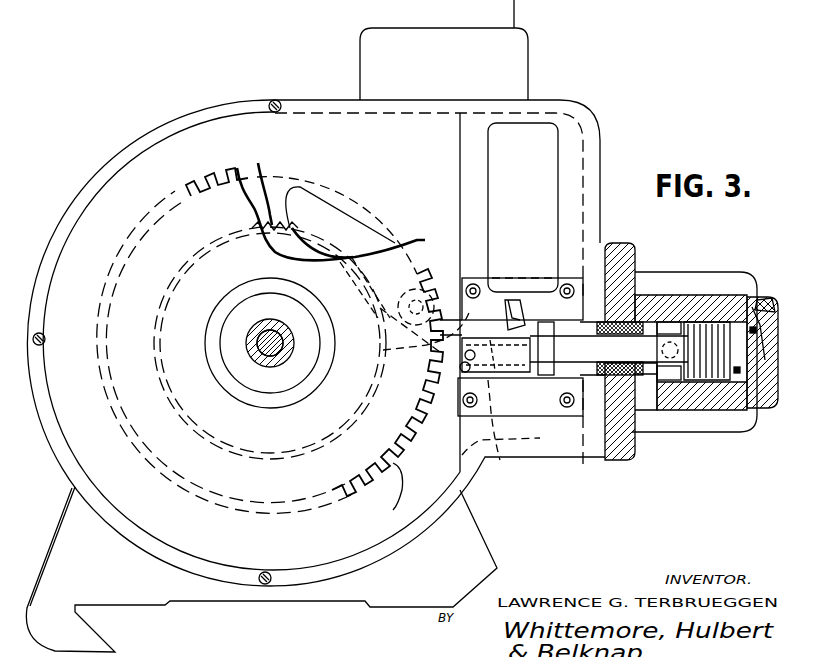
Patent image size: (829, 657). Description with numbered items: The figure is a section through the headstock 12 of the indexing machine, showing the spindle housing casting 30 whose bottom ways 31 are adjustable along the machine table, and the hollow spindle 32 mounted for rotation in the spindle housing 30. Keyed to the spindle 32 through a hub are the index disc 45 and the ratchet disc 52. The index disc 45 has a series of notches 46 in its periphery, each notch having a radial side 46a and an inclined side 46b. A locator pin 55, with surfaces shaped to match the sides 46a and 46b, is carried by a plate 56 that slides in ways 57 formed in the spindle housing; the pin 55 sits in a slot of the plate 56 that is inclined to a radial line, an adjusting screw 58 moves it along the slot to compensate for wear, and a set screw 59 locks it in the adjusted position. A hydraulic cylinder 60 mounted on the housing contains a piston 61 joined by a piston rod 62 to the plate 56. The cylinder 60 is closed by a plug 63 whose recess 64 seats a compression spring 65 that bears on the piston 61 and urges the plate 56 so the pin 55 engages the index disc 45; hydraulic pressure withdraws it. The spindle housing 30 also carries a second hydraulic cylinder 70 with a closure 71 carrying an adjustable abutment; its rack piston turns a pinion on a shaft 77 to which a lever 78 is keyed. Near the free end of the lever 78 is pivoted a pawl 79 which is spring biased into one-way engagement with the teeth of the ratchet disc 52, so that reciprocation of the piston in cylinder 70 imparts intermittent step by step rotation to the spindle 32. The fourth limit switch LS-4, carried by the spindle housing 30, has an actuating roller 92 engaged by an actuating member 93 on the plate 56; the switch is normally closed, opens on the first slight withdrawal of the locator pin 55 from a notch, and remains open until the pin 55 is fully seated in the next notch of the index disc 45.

The headstock 12 is at (184, 99).
The spindle housing casting 30 is at (60, 452).
The ways 31 is at (98, 628).
The spindle 32 is at (246, 345).
The index disc 45 is at (362, 457).
The notches 46 is at (400, 488).
The radial side 46a is at (410, 420).
The inclined side 46b is at (420, 430).
The ratchet disc 52 is at (254, 190).
The locator pin 55 is at (462, 364).
The plate 56 is at (466, 320).
The ways 57 is at (598, 252).
The adjusting screw 58 is at (560, 380).
The set screw 59 is at (448, 368).
The hydraulic cylinder 60 is at (685, 432).
The piston 61 is at (712, 328).
The piston rod 62 is at (645, 432).
The plug 63 is at (766, 408).
The recess 64 is at (770, 345).
The compression spring 65 is at (762, 375).
The second hydraulic cylinder 70 is at (522, 61).
The closure 71 is at (508, 12).
The shaft 77 is at (382, 357).
The lever 78 is at (446, 290).
The pawl 79 is at (328, 218).
The actuating roller 92 is at (514, 300).
The actuating member 93 is at (510, 305).
The fourth limit switch LS-4 is at (537, 145).